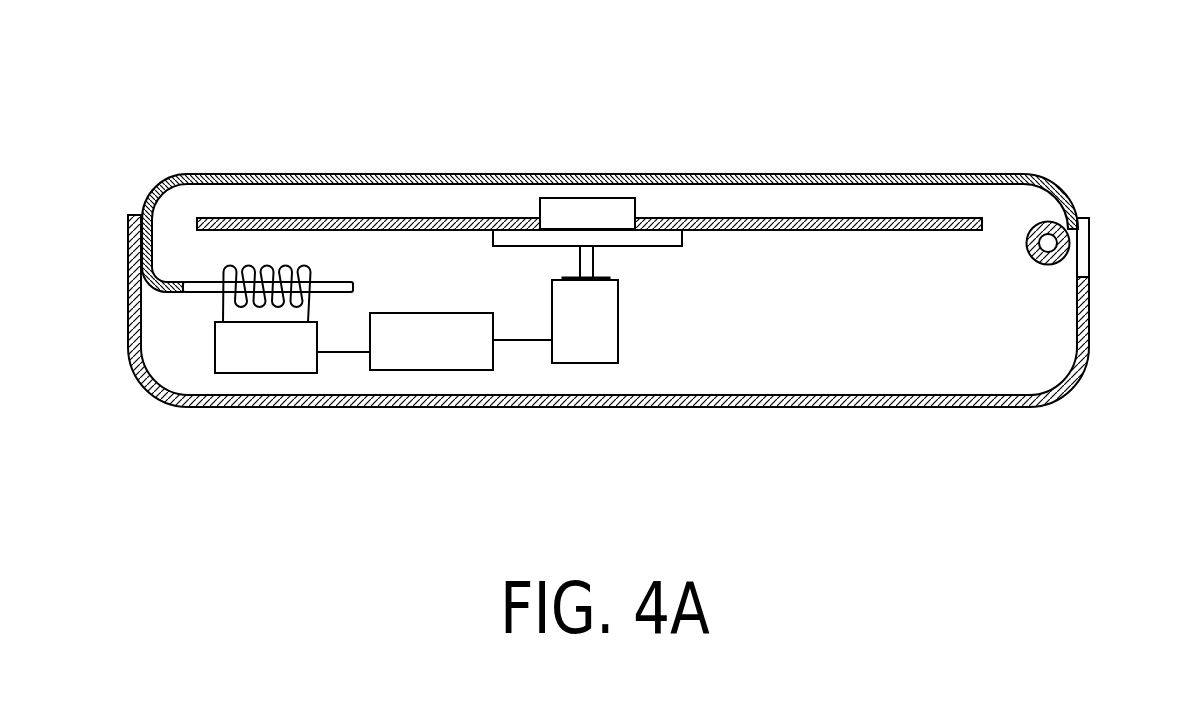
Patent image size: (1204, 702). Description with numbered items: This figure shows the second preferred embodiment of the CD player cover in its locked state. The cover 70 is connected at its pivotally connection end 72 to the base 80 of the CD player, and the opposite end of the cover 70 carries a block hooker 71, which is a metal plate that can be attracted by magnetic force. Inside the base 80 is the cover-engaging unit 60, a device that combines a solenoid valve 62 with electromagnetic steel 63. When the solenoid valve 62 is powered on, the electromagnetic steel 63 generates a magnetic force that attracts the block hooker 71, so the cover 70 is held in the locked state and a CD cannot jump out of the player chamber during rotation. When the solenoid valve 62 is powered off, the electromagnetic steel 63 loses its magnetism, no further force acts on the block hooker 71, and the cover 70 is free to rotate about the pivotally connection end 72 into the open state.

The cover-engaging unit 60 is at (222, 402).
The solenoid valve 62 is at (260, 360).
The electromagnetic steel 63 is at (210, 290).
The cover 70 is at (742, 162).
The block hooker 71 is at (128, 253).
The pivotally connection end 72 is at (1050, 244).
The base 80 is at (690, 393).